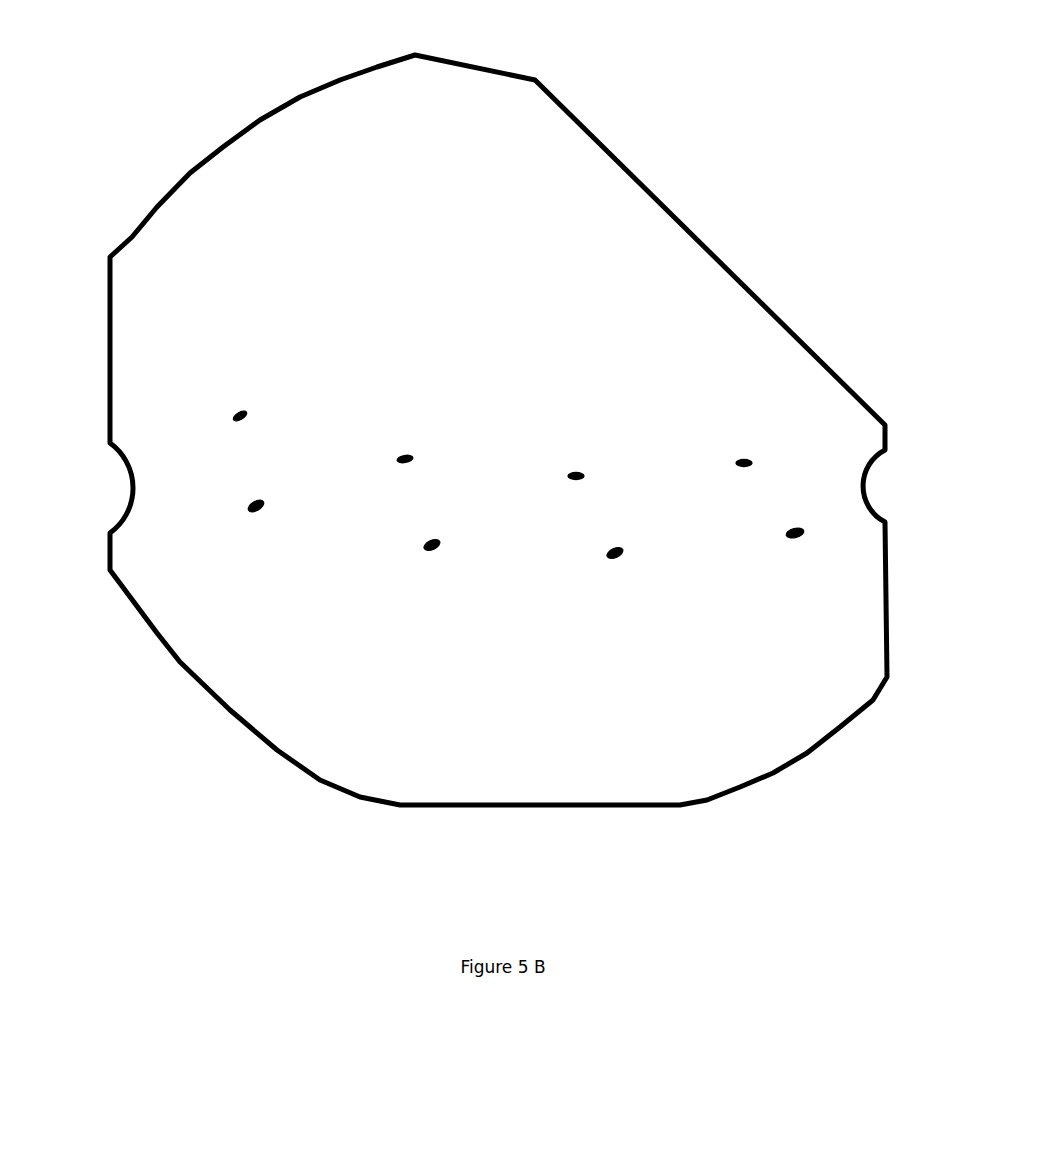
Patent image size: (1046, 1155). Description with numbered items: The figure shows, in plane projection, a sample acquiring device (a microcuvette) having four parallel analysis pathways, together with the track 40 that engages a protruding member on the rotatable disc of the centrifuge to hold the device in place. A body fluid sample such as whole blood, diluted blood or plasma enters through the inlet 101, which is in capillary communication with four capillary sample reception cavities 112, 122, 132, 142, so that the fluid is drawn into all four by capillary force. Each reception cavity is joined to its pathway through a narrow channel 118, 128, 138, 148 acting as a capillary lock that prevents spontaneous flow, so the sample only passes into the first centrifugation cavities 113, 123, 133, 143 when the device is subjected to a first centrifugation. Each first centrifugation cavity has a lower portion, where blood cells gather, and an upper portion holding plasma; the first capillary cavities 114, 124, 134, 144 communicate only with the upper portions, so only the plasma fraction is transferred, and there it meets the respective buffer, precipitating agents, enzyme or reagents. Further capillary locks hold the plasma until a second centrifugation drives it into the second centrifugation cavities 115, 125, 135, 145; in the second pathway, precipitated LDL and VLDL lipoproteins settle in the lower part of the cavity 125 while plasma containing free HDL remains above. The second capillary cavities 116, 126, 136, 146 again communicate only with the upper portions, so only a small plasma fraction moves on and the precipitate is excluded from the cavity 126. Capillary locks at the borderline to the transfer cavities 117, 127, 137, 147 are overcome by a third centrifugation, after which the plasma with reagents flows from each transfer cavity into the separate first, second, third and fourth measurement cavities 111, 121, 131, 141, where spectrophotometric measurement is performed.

The inlet 101 is at (484, 57).
The track 40 is at (493, 763).
The first measurement cavity 111 is at (415, 634).
The capillary sample reception cavity 112 is at (403, 195).
The first centrifugation cavity 113 is at (335, 456).
The first capillary cavity 114 is at (400, 402).
The second centrifugation cavity 115 is at (388, 505).
The second capillary cavity 116 is at (451, 507).
The transfer cavity 117 is at (440, 572).
The narrow channel (capillary lock) 118 is at (342, 288).
The second measurement cavity 121 is at (608, 643).
The capillary sample reception cavity 122 is at (500, 205).
The first centrifugation cavity 123 is at (512, 518).
The first capillary cavity 124 is at (560, 407).
The second centrifugation cavity 125 is at (575, 497).
The second capillary cavity 126 is at (628, 525).
The transfer cavity 127 is at (628, 590).
The narrow channel (capillary lock) 128 is at (503, 313).
The third measurement cavity 131 is at (225, 583).
The capillary sample reception cavity 132 is at (285, 210).
The first centrifugation cavity 133 is at (160, 450).
The first capillary cavity 134 is at (248, 352).
The second centrifugation cavity 135 is at (217, 460).
The second capillary cavity 136 is at (270, 470).
The transfer cavity 137 is at (253, 538).
The narrow channel (capillary lock) 138 is at (223, 237).
The fourth measurement cavity 141 is at (807, 617).
The capillary sample reception cavity 142 is at (610, 270).
The first centrifugation cavity 143 is at (663, 412).
The first capillary cavity 144 is at (723, 417).
The second centrifugation cavity 145 is at (743, 490).
The second capillary cavity 146 is at (800, 500).
The transfer cavity 147 is at (813, 567).
The narrow channel (capillary lock) 148 is at (632, 322).